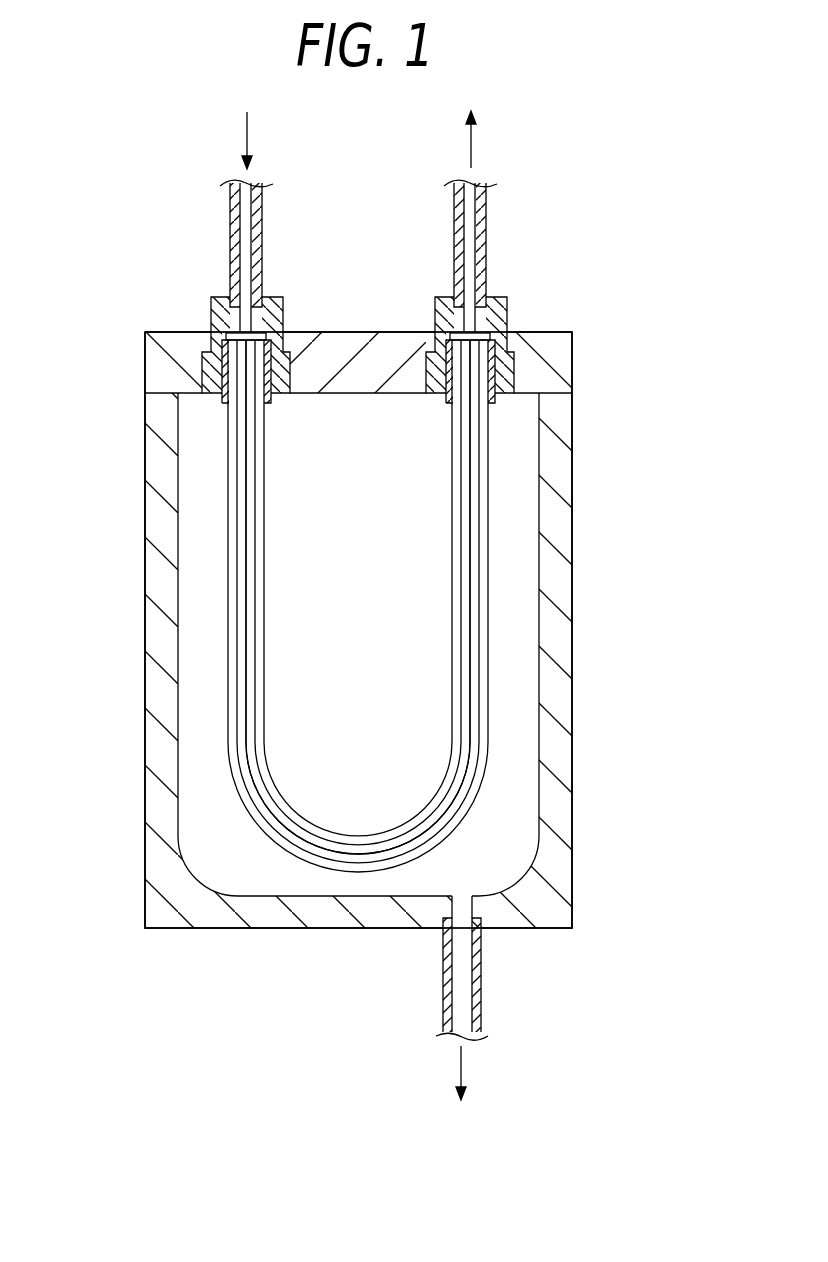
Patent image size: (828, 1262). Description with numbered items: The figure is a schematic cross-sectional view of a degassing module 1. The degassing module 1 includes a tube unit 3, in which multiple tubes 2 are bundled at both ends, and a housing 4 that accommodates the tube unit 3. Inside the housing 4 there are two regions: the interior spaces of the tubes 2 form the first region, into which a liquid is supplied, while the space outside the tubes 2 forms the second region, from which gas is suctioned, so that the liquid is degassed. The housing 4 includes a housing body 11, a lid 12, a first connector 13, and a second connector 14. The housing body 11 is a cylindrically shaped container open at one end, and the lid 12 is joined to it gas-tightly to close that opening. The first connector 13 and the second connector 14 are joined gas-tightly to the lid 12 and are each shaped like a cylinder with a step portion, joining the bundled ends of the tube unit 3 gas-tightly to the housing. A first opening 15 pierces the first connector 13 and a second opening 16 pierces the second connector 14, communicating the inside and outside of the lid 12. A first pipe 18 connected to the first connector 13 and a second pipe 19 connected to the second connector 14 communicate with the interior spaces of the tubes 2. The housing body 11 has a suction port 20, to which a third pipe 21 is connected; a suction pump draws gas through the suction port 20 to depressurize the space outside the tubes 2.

The degassing module 1 is at (625, 203).
The tube 2 is at (490, 558).
The tube unit 3 is at (490, 492).
The housing 4 is at (572, 650).
The housing body 11 is at (145, 495).
The lid 12 is at (145, 362).
The first connector 13 is at (210, 310).
The second connector 14 is at (507, 310).
The first opening 15 is at (248, 306).
The second opening 16 is at (472, 306).
The first pipe 18 is at (230, 230).
The second pipe 19 is at (487, 223).
The suction port 20 is at (452, 915).
The third pipe 21 is at (481, 985).